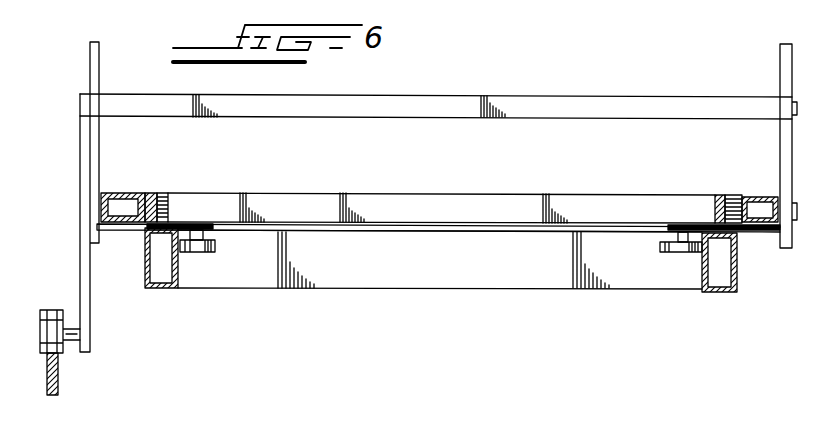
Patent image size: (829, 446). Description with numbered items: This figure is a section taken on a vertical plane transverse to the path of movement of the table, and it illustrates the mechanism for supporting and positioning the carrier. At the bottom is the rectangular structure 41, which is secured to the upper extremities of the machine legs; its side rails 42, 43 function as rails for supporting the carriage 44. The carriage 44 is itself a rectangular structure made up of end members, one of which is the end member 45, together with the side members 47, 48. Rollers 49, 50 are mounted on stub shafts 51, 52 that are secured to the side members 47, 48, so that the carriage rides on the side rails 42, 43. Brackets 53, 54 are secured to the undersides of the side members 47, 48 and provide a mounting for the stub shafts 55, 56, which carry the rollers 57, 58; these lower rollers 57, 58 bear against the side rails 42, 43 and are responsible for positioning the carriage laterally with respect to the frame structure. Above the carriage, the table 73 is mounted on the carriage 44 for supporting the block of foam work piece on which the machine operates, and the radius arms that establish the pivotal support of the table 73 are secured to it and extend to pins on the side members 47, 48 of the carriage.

The table 73 is at (397, 108).
The carriage 44 is at (431, 194).
The end member 45 is at (511, 212).
The rectangular structure 41 is at (302, 288).
The side member 47 is at (125, 193).
The stub shaft 51 is at (150, 196).
The roller 49 is at (165, 208).
The bracket 53 is at (198, 226).
The side rail 43 is at (154, 289).
The stub shaft 55 is at (196, 252).
The roller 57 is at (194, 243).
The side member 48 is at (755, 207).
The roller 50 is at (715, 204).
The stub shaft 52 is at (731, 210).
The bracket 54 is at (683, 228).
The side rail 42 is at (716, 291).
The stub shaft 56 is at (670, 241).
The roller 58 is at (681, 255).